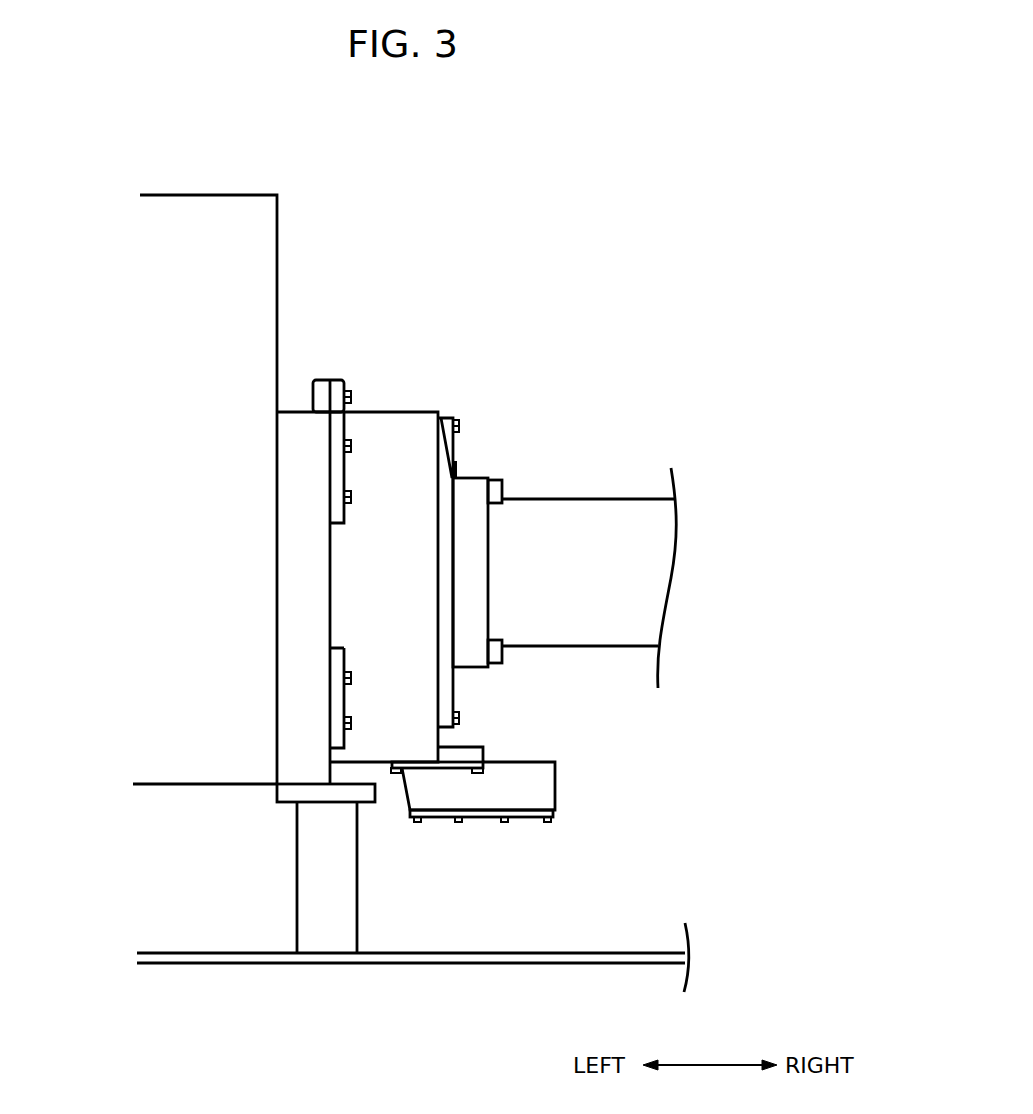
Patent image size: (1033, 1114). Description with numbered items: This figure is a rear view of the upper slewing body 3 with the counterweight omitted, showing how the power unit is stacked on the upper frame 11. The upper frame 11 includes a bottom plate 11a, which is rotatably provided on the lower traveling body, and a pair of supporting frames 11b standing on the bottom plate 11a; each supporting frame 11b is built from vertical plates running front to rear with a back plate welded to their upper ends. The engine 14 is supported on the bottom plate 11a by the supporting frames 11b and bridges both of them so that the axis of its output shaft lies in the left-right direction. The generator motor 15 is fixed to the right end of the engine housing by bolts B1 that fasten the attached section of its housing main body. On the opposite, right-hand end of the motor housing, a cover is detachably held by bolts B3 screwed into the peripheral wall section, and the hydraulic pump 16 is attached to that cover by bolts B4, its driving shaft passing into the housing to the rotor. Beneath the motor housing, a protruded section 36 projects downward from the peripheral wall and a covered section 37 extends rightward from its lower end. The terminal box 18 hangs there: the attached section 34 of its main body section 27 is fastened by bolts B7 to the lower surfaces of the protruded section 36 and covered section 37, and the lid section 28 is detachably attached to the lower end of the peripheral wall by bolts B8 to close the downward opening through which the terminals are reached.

The upper slewing body 3 is at (630, 237).
The upper frame 11 is at (350, 1025).
The bottom plate 11a is at (240, 964).
The supporting frame 11b is at (327, 942).
The engine 14 is at (206, 195).
The generator motor 15 is at (407, 412).
The hydraulic pump 16 is at (638, 499).
The terminal box 18 is at (628, 780).
The main body section 27 is at (543, 780).
The lid section 28 is at (553, 813).
The attached section 34 is at (420, 773).
The protruded section 36 is at (368, 750).
The covered section 37 is at (462, 750).
The bolt B1 is at (352, 397).
The bolt B3 is at (460, 426).
The bolt B4 is at (503, 490).
The bolt B7 is at (480, 773).
The bolts B8 is at (417, 823).